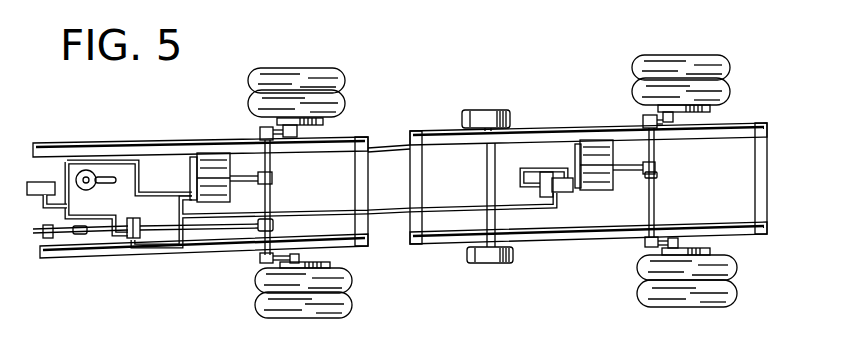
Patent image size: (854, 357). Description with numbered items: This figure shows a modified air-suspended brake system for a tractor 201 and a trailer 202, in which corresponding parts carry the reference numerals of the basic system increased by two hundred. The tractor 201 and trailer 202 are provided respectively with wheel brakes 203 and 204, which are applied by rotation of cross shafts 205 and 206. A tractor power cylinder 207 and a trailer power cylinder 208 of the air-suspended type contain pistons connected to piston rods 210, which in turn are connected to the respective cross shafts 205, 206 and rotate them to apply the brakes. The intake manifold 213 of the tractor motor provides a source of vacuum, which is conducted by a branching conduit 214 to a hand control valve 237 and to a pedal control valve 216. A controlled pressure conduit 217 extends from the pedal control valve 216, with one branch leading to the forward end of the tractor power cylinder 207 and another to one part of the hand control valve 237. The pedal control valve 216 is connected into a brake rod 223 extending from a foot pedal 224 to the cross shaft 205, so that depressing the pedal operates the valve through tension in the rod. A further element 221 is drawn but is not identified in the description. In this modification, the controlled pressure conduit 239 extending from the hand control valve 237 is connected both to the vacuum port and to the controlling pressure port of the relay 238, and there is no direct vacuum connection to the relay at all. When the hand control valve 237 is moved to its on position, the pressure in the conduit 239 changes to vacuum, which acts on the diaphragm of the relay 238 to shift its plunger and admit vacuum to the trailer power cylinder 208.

The tractor 201 is at (228, 111).
The trailer 202 is at (577, 101).
The wheel brakes 203 is at (338, 93).
The wheel brakes 204 is at (708, 106).
The cross shaft 205 is at (273, 177).
The cross shaft 206 is at (656, 160).
The tractor power cylinder 207 is at (211, 172).
The trailer power cylinder 208 is at (595, 158).
The piston rods 210 is at (266, 184).
The intake manifold 213 is at (30, 180).
The branching conduit 214 is at (69, 160).
The pedal control valve 216 is at (133, 242).
The controlled pressure conduit 217 is at (397, 214).
The lever 221 is at (110, 178).
The brake rod 223 is at (215, 229).
The foot pedal 224 is at (47, 238).
The hand control valve 237 is at (92, 170).
The relay 238 is at (565, 192).
The controlled pressure conduit 239 is at (388, 148).